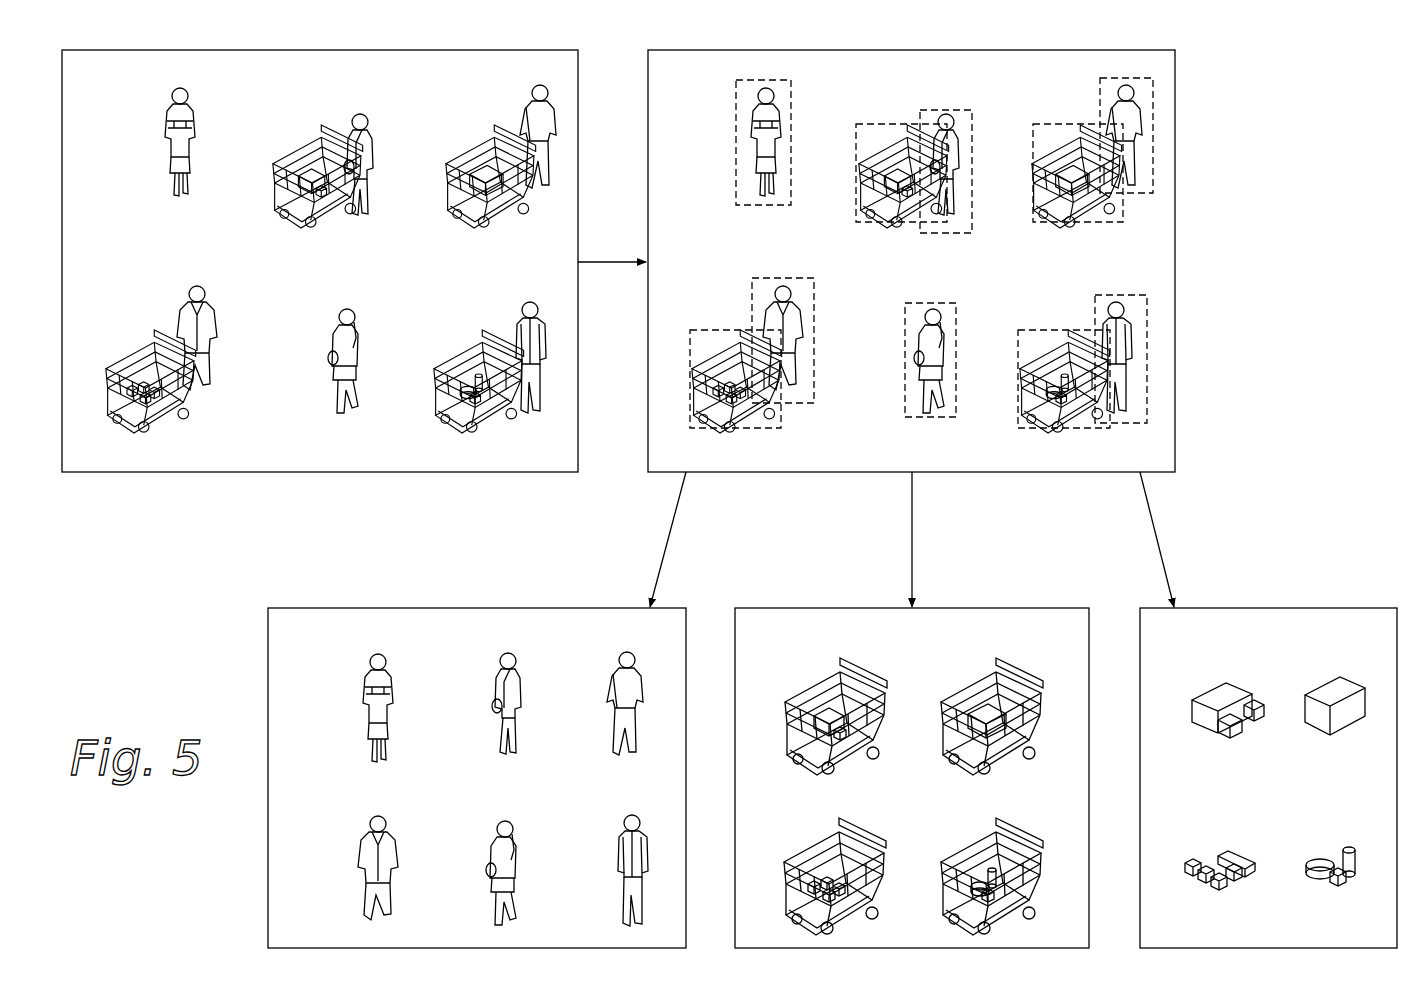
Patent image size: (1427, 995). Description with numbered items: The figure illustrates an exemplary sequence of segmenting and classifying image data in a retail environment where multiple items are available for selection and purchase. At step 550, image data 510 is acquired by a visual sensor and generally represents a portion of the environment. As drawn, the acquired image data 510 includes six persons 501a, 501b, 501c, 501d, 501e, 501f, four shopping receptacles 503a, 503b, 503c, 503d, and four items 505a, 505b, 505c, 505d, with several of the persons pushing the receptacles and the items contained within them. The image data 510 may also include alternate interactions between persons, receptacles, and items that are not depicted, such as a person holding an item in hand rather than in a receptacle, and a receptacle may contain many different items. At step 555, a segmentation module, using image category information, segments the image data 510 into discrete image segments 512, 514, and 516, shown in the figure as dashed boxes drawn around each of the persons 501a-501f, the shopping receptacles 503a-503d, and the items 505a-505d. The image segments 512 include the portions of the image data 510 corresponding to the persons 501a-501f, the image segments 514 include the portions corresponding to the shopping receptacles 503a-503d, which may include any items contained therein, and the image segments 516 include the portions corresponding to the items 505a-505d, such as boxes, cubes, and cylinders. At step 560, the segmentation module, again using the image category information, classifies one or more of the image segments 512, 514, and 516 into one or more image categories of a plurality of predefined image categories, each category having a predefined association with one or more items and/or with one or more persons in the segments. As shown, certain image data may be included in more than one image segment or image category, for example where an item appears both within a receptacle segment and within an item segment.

The person 501a is at (176, 92).
The person 501b is at (358, 114).
The person 501c is at (542, 90).
The person 501d is at (192, 290).
The person 501e is at (346, 312).
The person 501f is at (534, 302).
The shopping receptacle 503a is at (294, 215).
The shopping receptacle 503b is at (468, 215).
The shopping receptacle 503c is at (126, 425).
The shopping receptacle 503d is at (454, 425).
The item 505a is at (302, 165).
The item 505b is at (487, 155).
The item 505c is at (150, 368).
The item 505d is at (476, 360).
The image data 510 is at (356, 472).
The image segments 512 is at (503, 608).
The image segments 514 is at (1011, 608).
The image segments 516 is at (1291, 608).
The step 550 is at (166, 477).
The step 555 is at (835, 478).
The step 560 is at (1207, 519).